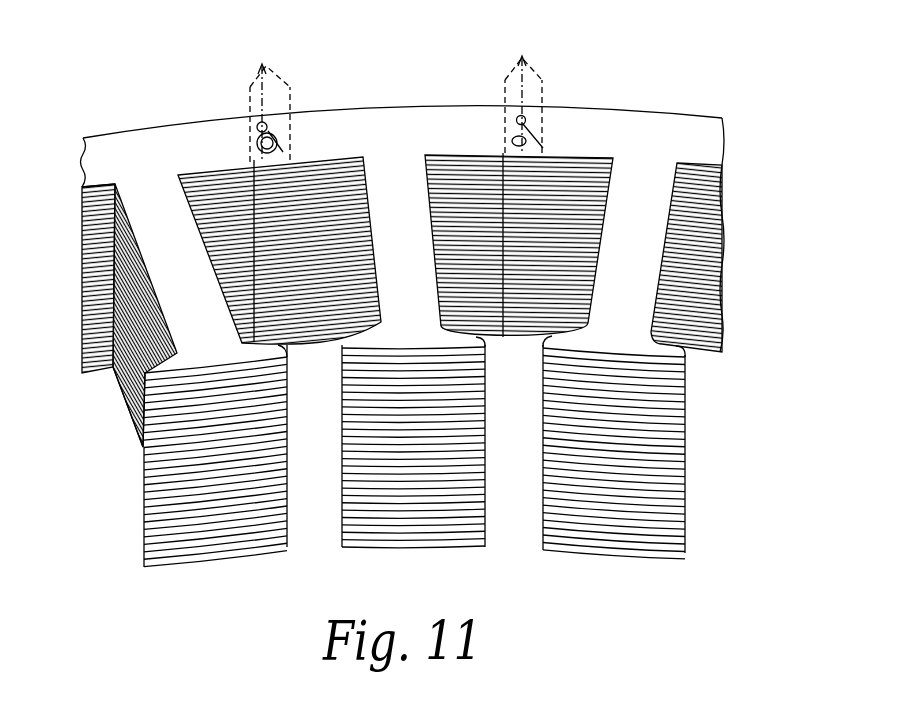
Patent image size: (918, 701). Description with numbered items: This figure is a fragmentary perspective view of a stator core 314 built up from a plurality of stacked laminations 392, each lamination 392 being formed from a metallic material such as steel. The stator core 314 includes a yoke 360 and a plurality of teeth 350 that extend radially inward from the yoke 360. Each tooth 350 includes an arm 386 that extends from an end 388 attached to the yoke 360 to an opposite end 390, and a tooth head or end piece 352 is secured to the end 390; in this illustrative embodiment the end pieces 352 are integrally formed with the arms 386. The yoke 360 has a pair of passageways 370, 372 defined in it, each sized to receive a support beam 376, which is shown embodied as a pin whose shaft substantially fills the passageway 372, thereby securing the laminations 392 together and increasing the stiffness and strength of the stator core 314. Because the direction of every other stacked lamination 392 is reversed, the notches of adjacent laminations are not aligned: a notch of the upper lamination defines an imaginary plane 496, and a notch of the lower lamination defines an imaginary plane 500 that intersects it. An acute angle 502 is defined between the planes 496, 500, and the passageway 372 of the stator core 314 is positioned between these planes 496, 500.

The stator core 314 is at (760, 100).
The teeth 350 is at (222, 540).
The end piece 352 is at (130, 407).
The yoke 360 is at (702, 126).
The passageway 370 is at (276, 124).
The passageway 372 is at (288, 150).
The support beam 376 is at (258, 136).
The arm 386 is at (140, 228).
The end 388 is at (128, 194).
The end 390 is at (140, 375).
The lamination 392 is at (186, 176).
The imaginary plane 496 is at (282, 75).
The imaginary plane 500 is at (250, 92).
The acute angle 502 is at (268, 88).